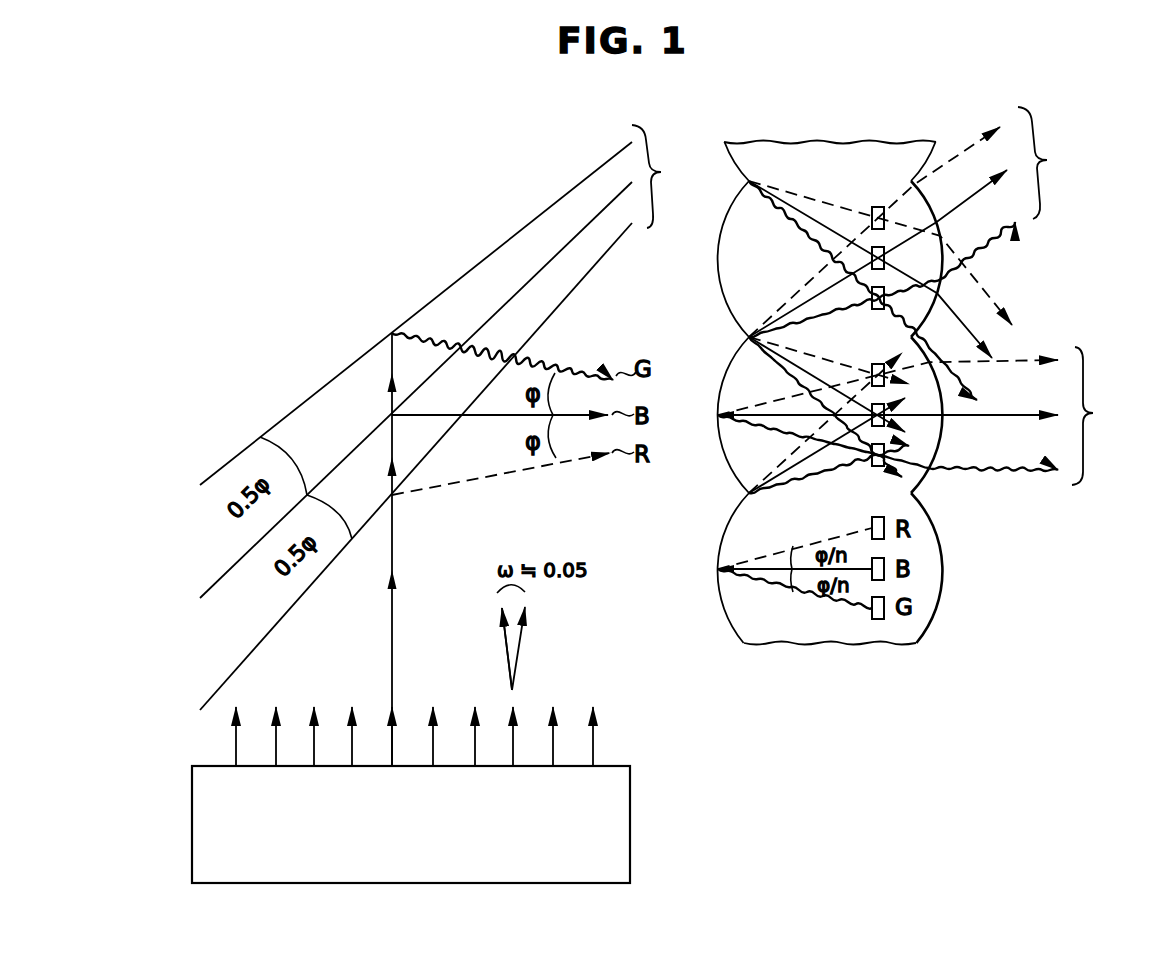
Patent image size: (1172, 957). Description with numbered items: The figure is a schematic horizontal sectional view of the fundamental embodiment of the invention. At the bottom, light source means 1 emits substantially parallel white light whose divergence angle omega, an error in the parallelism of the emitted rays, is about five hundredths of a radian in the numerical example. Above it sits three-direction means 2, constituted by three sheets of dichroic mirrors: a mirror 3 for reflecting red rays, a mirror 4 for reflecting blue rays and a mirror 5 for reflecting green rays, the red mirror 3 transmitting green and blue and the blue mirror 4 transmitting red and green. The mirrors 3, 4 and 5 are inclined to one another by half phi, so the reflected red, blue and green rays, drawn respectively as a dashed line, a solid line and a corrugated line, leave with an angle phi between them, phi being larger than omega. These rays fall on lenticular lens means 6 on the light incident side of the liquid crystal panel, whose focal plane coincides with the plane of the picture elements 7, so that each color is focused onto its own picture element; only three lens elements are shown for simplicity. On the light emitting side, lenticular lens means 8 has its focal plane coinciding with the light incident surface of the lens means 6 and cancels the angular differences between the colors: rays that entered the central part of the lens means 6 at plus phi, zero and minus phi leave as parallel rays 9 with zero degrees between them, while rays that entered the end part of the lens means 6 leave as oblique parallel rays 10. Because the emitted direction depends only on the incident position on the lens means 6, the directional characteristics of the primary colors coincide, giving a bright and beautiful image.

The light source means 1 is at (192, 826).
The three-direction means 2 is at (657, 176).
The red-rays reflecting mirror 3 is at (223, 692).
The blue-rays reflecting mirror 4 is at (223, 578).
The green-rays reflecting mirror 5 is at (223, 467).
The lenticular lens means 6 is at (727, 620).
The picture elements 7 is at (857, 628).
The lenticular lens means 8 is at (928, 622).
The parallel rays 9 is at (917, 415).
The oblique parallel rays 10 is at (919, 253).